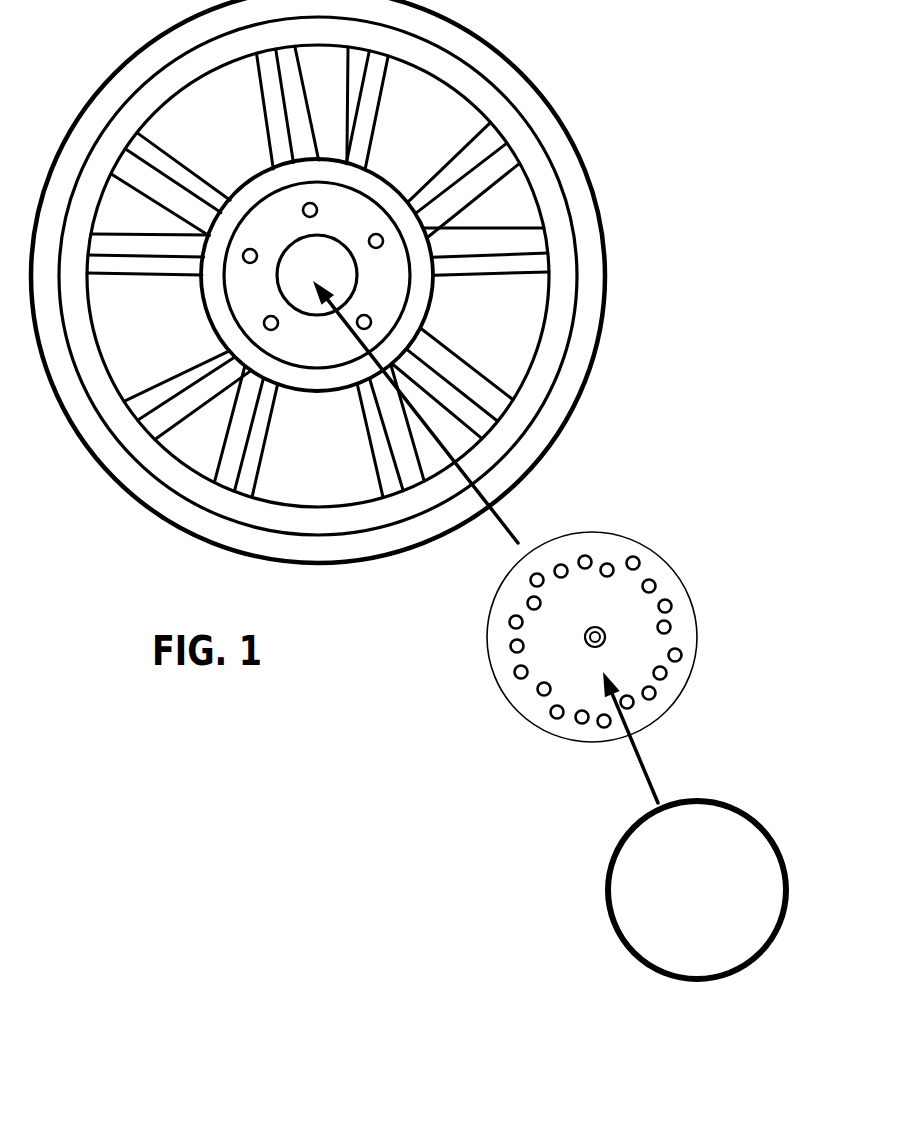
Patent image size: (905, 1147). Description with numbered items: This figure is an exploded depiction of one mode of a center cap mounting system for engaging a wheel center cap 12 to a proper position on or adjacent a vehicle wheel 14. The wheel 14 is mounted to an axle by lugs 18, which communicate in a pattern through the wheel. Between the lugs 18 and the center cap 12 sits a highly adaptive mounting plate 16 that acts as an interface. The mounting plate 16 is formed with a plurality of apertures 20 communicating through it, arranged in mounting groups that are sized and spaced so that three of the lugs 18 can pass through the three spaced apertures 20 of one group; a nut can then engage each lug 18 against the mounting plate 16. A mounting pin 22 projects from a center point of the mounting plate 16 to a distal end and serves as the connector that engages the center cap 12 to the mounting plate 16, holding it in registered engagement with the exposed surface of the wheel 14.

The wheel center cap 12 is at (610, 855).
The vehicle wheel 14 is at (524, 93).
The mounting plate 16 is at (494, 660).
The lugs 18 is at (372, 226).
The apertures 20 is at (677, 646).
The mounting pin 22 is at (583, 641).